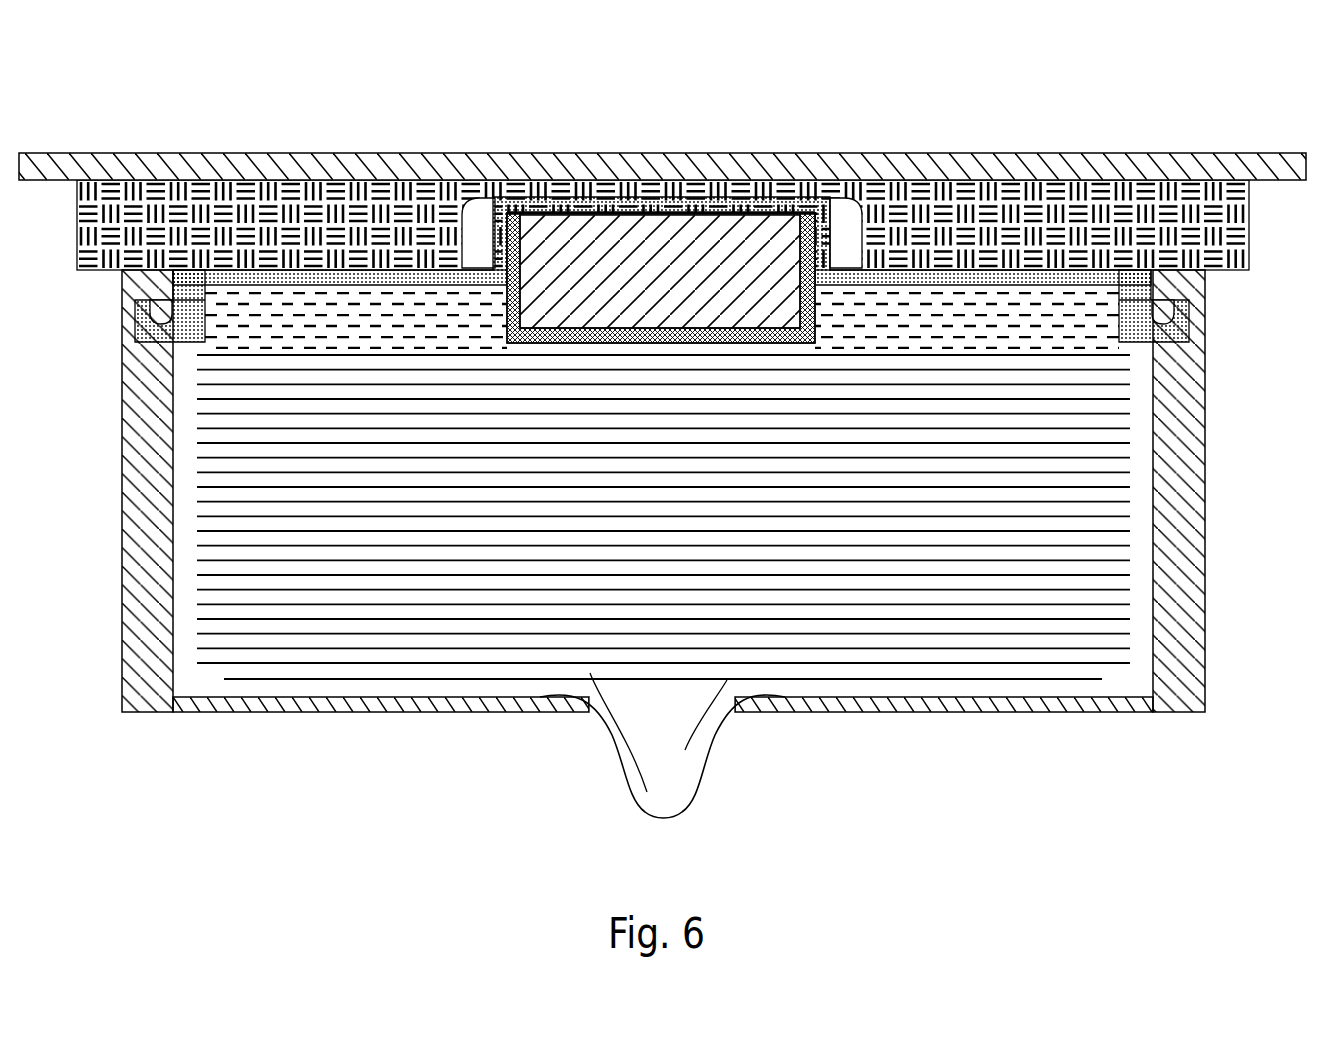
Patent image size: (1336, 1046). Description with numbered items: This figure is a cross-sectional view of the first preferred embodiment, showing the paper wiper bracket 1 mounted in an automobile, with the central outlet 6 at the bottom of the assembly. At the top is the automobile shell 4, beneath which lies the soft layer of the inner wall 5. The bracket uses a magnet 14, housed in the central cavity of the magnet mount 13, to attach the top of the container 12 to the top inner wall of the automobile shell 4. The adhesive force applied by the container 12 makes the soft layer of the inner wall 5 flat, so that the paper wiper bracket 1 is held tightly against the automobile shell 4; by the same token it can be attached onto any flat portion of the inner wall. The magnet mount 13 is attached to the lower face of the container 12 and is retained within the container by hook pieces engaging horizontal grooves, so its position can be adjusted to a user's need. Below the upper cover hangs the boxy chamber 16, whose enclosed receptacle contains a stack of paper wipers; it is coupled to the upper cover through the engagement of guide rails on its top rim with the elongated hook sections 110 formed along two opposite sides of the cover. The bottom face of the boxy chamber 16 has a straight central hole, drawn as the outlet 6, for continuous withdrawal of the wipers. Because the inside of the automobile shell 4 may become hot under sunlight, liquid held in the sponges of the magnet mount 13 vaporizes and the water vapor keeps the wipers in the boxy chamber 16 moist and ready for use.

The paper wiper bracket 1 is at (833, 208).
The automobile shell 4 is at (205, 168).
The soft layer of the inner wall 5 is at (1003, 233).
The outlet 6 is at (630, 755).
The container 12 is at (565, 195).
The magnet mount 13 is at (450, 168).
The magnet 14 is at (670, 270).
The boxy chamber 16 is at (145, 643).
The hook sections 110 is at (135, 325).